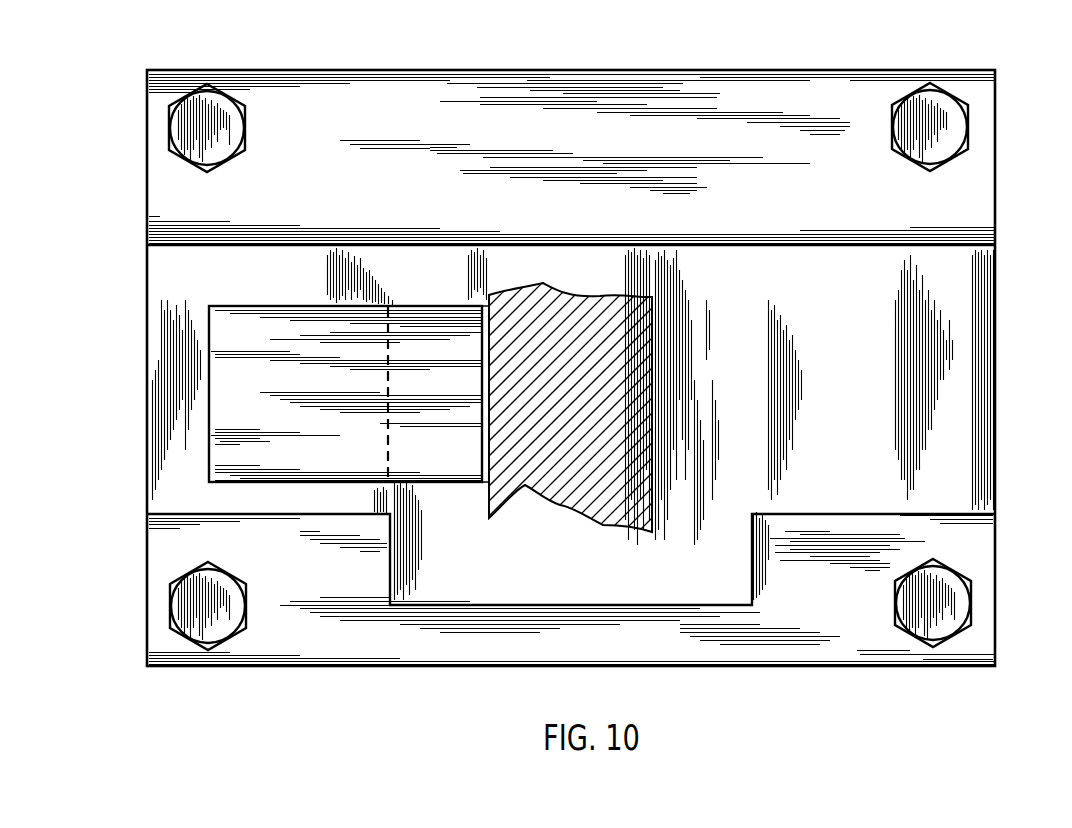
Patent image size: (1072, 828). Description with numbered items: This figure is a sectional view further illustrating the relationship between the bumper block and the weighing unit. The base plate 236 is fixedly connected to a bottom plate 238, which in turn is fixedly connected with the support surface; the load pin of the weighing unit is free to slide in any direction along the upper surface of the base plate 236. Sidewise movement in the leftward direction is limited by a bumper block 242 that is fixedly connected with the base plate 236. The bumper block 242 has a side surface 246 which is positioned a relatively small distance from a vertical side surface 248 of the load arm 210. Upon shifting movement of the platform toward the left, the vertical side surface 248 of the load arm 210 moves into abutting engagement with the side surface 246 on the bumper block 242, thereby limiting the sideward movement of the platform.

The load arm 210 is at (664, 348).
The base plate 236 is at (571, 368).
The bottom plate 238 is at (790, 627).
The bumper block 242 is at (218, 378).
The side surface 246 is at (485, 328).
The vertical side surface 248 is at (489, 497).